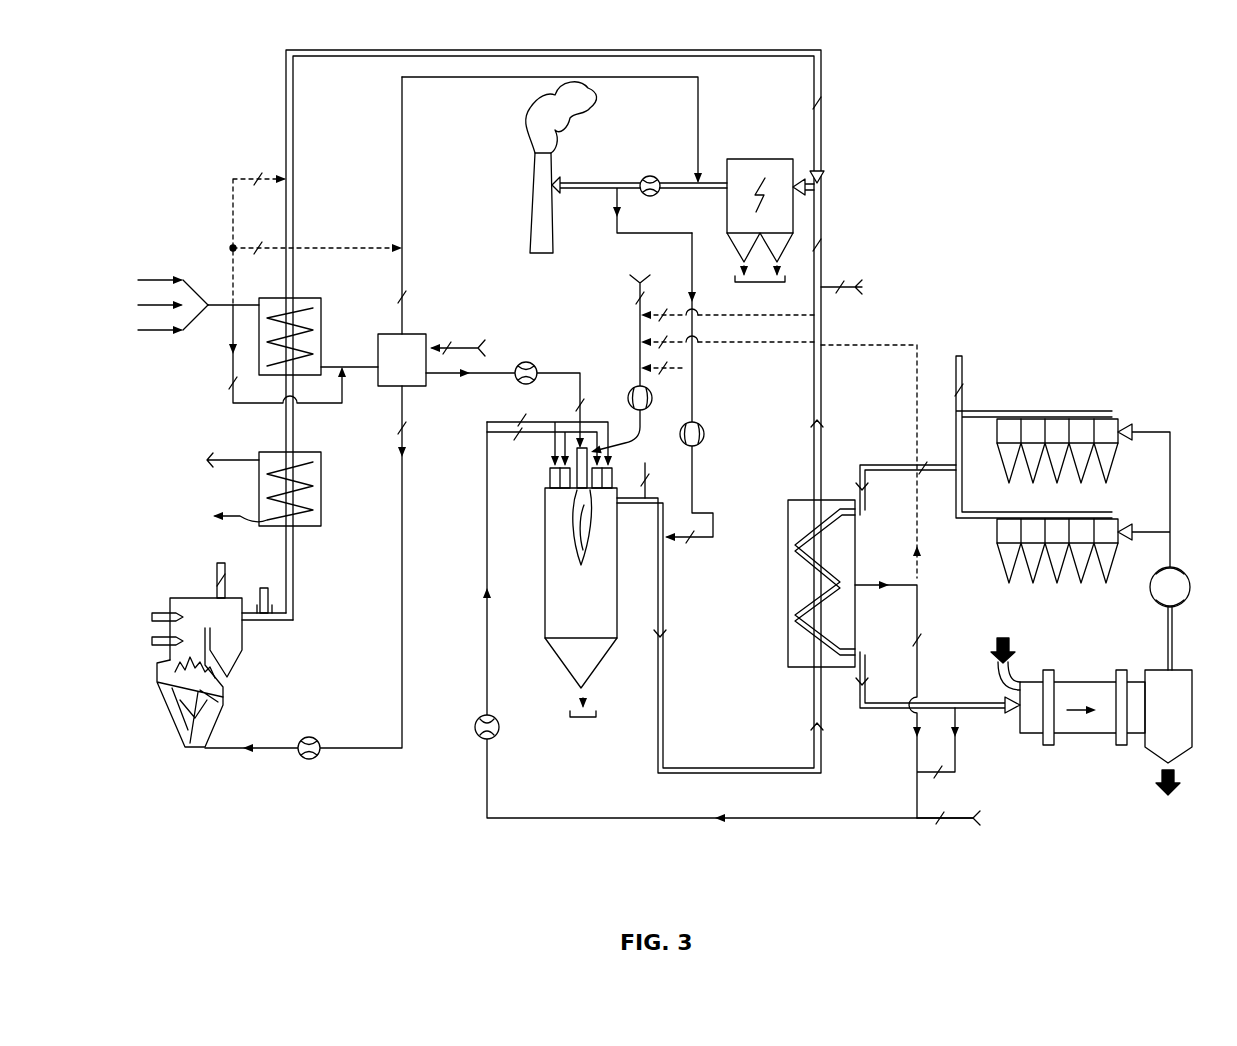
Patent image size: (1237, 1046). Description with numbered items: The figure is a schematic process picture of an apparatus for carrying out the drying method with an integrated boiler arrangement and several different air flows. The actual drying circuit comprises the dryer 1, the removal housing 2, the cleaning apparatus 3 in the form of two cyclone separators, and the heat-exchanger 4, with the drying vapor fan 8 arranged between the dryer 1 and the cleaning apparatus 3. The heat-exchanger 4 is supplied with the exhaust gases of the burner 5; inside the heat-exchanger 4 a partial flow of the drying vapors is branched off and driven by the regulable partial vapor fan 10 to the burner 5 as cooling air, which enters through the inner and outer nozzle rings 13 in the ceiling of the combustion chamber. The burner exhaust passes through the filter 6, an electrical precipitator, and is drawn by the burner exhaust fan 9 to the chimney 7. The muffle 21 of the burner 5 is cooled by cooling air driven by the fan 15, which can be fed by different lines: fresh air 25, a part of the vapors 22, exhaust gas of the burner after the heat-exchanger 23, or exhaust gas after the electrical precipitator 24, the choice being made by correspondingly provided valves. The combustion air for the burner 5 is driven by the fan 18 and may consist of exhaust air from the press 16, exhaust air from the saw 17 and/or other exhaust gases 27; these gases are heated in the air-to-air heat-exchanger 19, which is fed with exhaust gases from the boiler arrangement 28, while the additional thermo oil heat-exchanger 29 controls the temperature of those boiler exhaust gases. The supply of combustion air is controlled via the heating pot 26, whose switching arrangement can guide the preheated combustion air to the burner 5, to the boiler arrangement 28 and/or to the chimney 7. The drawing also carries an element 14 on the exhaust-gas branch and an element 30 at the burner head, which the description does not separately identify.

The dryer 1 is at (1088, 735).
The removal housing 2 is at (1180, 700).
The cleaning apparatus 3 is at (1062, 427).
The heat-exchanger 4 is at (788, 500).
The burner 5 is at (545, 578).
The filter 6 is at (777, 158).
The chimney 7 is at (530, 192).
The drying vapor fan 8 is at (1183, 575).
The burner exhaust fan 9 is at (648, 176).
The regulable partial vapor fan 10 is at (496, 716).
The inner and outer nozzle rings 13 is at (961, 823).
The valve 14 is at (705, 430).
The fan 15 is at (635, 385).
The exhaust air from press 16 is at (159, 286).
The exhaust air from saw 17 is at (159, 324).
The fan 18 is at (530, 361).
The heat-exchanger 19 is at (322, 305).
The muffle 21 is at (577, 470).
The vapors 22 is at (673, 340).
The exhaust gas of the burner after heat-exchanger 23 is at (678, 313).
The exhaust gas after the electrical precipitator 24 is at (683, 368).
The fresh air 25 is at (642, 316).
The heating pot 26 is at (426, 334).
The other exhaust gases 27 is at (184, 305).
The boiler arrangement 28 is at (178, 596).
The additional heat-exchanger 29 is at (322, 473).
The burner 30 is at (550, 474).